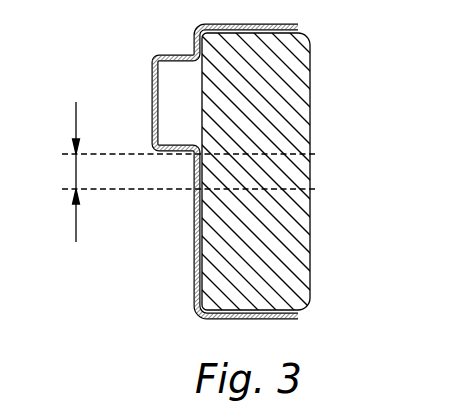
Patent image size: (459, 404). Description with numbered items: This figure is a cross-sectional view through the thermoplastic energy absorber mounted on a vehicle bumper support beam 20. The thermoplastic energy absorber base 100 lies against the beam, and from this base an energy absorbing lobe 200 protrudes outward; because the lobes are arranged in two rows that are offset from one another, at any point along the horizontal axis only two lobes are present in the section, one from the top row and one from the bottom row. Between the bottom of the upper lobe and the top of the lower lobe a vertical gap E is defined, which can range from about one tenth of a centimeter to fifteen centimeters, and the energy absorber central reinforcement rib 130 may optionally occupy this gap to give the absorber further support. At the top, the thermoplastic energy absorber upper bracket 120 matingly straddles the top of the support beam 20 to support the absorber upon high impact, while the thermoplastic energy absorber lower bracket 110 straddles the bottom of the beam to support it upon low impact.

The support beam 20 is at (277, 101).
The thermoplastic energy absorber base 100 is at (190, 178).
The thermoplastic energy absorber lower bracket 110 is at (233, 320).
The thermoplastic energy absorber upper bracket 120 is at (237, 24).
The energy absorber central reinforcement rib 130 is at (193, 172).
The energy absorbing lobe 200 is at (152, 97).
The vertical gap E is at (77, 172).